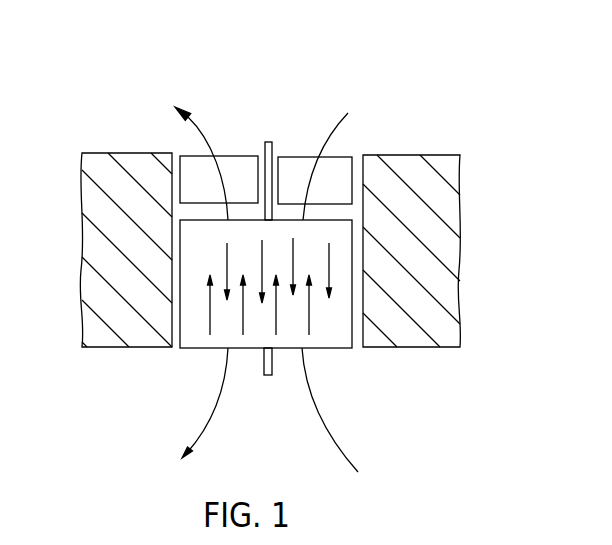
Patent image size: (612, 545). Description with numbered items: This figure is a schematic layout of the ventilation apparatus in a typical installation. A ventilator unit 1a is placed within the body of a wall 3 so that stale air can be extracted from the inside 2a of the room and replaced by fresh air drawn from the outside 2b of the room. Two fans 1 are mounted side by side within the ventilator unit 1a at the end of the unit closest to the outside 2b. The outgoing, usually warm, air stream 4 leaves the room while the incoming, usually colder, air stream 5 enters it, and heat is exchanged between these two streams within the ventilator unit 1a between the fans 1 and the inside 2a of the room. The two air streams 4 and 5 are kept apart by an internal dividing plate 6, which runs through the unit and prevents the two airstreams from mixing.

The fans 1 is at (246, 189).
The ventilator unit 1a is at (177, 279).
The inside of the room 2a is at (393, 400).
The outside of the room 2b is at (425, 128).
The wall 3 is at (120, 190).
The outgoing air stream 4 is at (188, 161).
The incoming air stream 5 is at (333, 161).
The internal dividing plate 6 is at (267, 141).